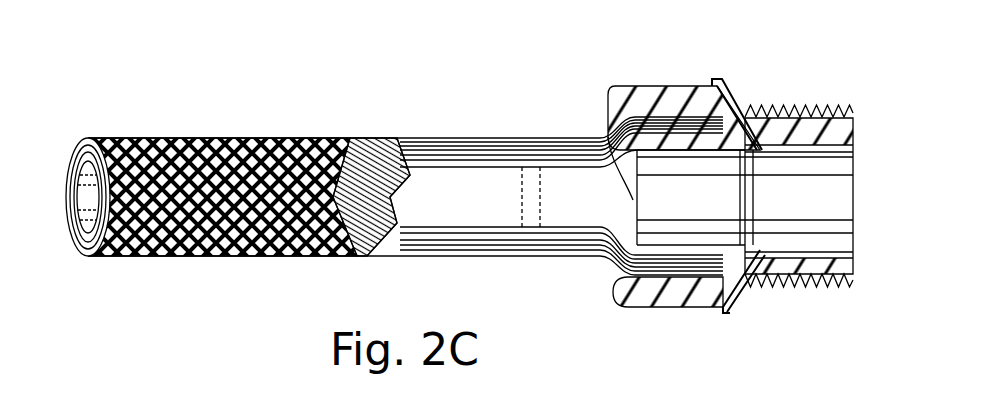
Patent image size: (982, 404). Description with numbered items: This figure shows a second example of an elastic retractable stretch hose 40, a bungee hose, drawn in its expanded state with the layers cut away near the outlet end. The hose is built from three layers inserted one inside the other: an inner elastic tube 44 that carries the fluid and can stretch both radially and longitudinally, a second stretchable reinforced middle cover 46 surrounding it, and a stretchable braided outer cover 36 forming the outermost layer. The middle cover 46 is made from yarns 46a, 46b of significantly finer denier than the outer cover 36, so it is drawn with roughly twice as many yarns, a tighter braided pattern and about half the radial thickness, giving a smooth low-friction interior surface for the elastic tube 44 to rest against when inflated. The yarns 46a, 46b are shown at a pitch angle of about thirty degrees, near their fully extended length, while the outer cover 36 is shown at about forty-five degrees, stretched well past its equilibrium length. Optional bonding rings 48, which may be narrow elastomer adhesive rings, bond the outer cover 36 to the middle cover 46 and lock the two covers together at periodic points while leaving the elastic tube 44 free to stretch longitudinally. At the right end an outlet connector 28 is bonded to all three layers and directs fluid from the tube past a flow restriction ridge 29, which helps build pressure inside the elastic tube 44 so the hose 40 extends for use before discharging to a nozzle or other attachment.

The outlet connector 28 is at (790, 286).
The flow restriction ridge 29 is at (612, 216).
The outer cover 36 is at (242, 138).
The elastic retractable stretch hose 40 is at (483, 98).
The inner elastic tube 44 is at (72, 163).
The middle cover 46 is at (84, 146).
The yarn of middle cover 46a is at (350, 140).
The yarn of middle cover 46b is at (386, 148).
The bonding rings 48 is at (292, 257).